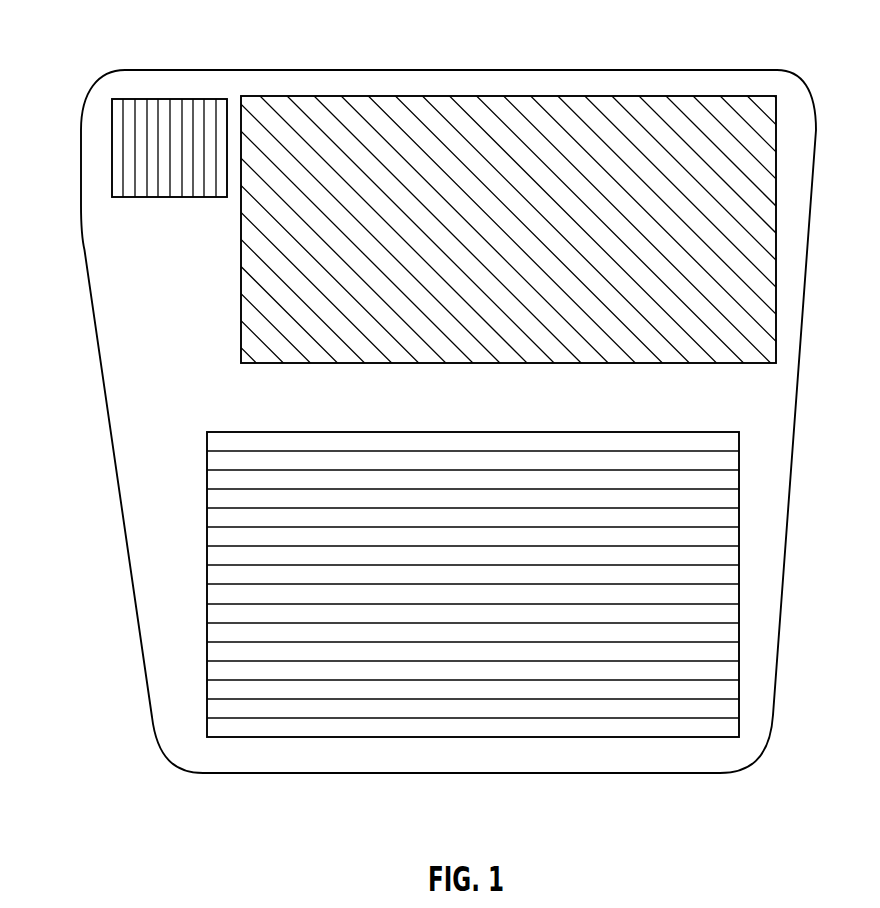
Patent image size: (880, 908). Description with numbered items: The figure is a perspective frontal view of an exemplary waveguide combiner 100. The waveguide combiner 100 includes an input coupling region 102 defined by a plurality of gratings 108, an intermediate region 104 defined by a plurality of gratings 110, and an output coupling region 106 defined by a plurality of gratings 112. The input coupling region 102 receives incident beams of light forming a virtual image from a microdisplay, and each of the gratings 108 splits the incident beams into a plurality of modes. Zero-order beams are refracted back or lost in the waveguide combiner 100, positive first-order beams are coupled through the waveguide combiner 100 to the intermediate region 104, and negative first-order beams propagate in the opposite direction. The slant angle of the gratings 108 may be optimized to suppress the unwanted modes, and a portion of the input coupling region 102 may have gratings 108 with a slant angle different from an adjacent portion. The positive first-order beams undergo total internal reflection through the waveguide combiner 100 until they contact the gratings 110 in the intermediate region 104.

The waveguide combiner 100 is at (198, 309).
The input coupling region 102 is at (147, 98).
The intermediate region 104 is at (535, 94).
The output coupling region 106 is at (740, 588).
The gratings 108 is at (123, 165).
The gratings 110 is at (685, 116).
The gratings 112 is at (670, 718).